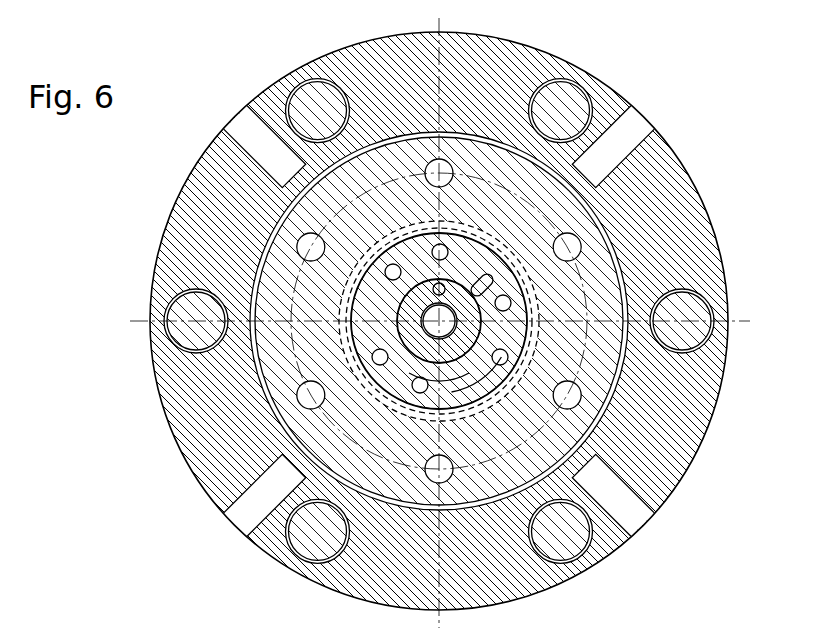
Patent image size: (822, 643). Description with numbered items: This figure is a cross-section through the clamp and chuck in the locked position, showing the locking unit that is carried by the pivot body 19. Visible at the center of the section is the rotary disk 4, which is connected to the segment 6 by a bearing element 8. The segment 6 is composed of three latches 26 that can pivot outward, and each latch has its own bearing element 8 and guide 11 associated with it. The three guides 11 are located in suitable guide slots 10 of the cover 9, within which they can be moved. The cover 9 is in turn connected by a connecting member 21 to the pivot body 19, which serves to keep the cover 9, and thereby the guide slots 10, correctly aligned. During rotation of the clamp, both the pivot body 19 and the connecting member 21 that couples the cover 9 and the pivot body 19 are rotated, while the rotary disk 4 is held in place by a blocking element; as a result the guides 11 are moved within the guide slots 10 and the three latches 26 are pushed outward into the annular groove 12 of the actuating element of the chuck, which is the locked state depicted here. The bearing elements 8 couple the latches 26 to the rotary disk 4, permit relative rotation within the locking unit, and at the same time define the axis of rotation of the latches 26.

The rotary disk 4 is at (380, 315).
The segment 6 is at (510, 330).
The bearing element 8 is at (377, 355).
The cover 9 is at (356, 310).
The guide slot 10 is at (452, 378).
The guide 11 is at (420, 388).
The annular groove 12 is at (465, 385).
The pivot body 19 is at (470, 300).
The connecting member 21 is at (447, 280).
The latch 26 is at (510, 338).